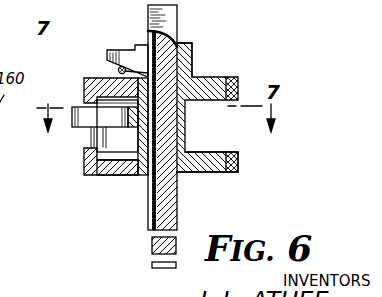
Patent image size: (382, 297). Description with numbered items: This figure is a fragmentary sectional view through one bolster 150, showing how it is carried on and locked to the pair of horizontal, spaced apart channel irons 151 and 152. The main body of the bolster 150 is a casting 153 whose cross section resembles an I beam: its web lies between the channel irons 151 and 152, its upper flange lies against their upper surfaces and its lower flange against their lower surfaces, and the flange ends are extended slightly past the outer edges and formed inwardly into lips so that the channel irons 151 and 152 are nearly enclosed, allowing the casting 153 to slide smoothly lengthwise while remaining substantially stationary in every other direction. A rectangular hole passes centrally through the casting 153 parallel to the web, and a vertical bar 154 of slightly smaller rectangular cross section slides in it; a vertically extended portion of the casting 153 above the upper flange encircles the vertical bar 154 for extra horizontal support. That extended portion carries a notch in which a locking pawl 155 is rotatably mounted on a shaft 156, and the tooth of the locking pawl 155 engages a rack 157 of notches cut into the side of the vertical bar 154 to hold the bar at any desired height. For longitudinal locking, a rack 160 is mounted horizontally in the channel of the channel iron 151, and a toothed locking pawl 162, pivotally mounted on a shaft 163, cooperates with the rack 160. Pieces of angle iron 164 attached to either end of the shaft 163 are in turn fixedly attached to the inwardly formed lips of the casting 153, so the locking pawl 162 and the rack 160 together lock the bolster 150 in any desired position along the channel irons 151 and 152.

The bolster 150 is at (192, 61).
The channel iron 151 is at (124, 163).
The channel iron 152 is at (213, 160).
The casting 153 is at (194, 44).
The vertical bar 154 is at (152, 245).
The locking pawl 155 is at (107, 60).
The shaft 156 is at (122, 66).
The rack 157 is at (152, 207).
The rack 160 is at (120, 152).
The locking pawl 162 is at (90, 138).
The shaft 163 is at (83, 167).
The angle iron 164 is at (84, 88).